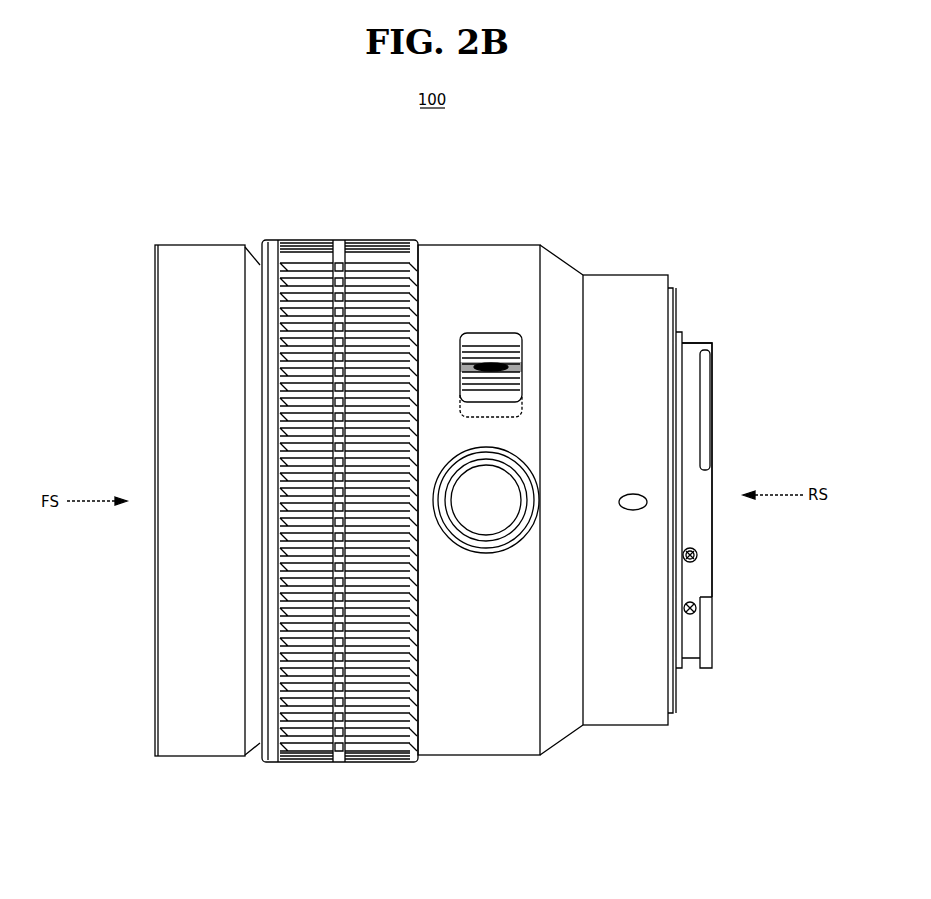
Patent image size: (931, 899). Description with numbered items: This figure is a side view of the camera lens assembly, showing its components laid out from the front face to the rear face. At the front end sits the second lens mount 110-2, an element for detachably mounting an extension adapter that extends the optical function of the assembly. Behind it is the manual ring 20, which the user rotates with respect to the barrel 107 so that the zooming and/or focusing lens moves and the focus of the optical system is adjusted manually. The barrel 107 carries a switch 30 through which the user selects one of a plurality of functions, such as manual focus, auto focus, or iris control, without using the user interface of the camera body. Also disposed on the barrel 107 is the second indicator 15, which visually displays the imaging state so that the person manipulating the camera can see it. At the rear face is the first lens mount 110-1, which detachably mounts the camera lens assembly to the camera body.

The second lens mount 110-2 is at (154, 278).
The manual ring 20 is at (302, 242).
The barrel 107 is at (477, 280).
The switch 30 is at (500, 358).
The first lens mount 110-1 is at (687, 344).
The second indicator 15 is at (645, 502).